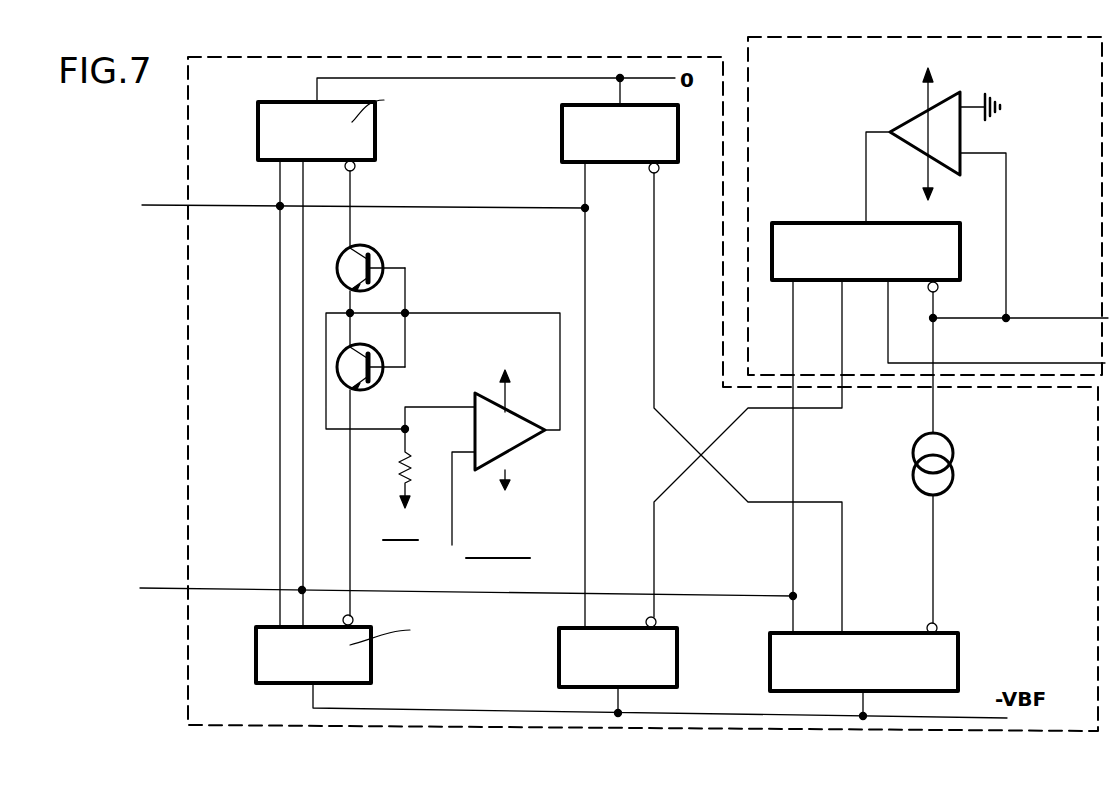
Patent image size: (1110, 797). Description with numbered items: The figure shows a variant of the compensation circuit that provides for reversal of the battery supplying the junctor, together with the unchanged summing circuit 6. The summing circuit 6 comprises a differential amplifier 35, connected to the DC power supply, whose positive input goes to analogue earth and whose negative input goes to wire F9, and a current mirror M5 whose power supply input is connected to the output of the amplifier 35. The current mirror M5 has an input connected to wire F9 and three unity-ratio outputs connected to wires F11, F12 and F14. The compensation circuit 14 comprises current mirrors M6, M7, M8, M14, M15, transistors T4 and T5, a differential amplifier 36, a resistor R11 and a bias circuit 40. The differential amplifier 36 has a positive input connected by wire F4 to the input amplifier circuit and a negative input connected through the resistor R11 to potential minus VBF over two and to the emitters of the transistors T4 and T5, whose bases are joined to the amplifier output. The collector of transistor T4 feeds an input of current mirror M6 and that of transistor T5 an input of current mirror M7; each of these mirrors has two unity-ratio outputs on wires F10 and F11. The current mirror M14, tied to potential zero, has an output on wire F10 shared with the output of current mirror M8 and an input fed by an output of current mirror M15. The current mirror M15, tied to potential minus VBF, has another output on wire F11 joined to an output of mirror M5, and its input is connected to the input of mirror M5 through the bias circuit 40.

The compensation circuit 14 is at (502, 68).
The summing circuit 6 is at (748, 50).
The differential amplifier 35 is at (928, 125).
The differential amplifier 36 is at (508, 420).
The bias circuit 40 is at (955, 460).
The current mirror M5 is at (845, 222).
The current mirror M6 is at (353, 150).
The current mirror M7 is at (352, 666).
The current mirror M8 is at (568, 668).
The current mirror M14 is at (574, 146).
The current mirror M15 is at (790, 668).
The transistor T4 is at (370, 255).
The transistor T5 is at (372, 386).
The resistor R11 is at (398, 475).
The wire F4 is at (453, 508).
The wire F9 is at (1035, 318).
The wire F10 is at (158, 204).
The wire F11 is at (172, 570).
The wire F12 is at (1028, 363).
The wire F14 is at (726, 437).